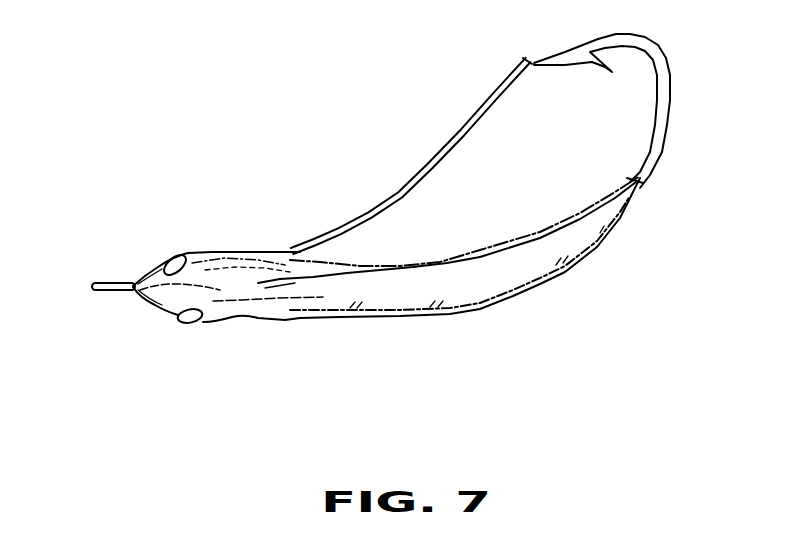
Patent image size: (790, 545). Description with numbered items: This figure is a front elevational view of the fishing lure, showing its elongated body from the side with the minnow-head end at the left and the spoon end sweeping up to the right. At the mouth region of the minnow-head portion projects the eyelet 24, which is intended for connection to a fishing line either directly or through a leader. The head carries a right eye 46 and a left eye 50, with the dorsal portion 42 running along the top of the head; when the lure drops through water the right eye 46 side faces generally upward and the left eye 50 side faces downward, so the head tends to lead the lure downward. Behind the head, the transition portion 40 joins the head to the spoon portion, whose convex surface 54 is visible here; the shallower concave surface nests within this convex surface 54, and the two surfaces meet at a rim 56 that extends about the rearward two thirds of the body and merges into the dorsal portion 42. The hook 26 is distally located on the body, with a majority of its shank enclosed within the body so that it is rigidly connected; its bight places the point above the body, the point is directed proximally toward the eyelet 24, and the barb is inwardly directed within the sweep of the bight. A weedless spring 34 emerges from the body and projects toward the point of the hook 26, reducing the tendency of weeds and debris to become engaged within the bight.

The eyelet 24 is at (113, 292).
The hook 26 is at (666, 63).
The weedless spring 34 is at (459, 134).
The transition portion 40 is at (358, 266).
The dorsal portion 42 is at (250, 301).
The right eye 46 is at (186, 254).
The left eye 50 is at (203, 323).
The convex surface 54 is at (520, 286).
The rim 56 is at (577, 212).